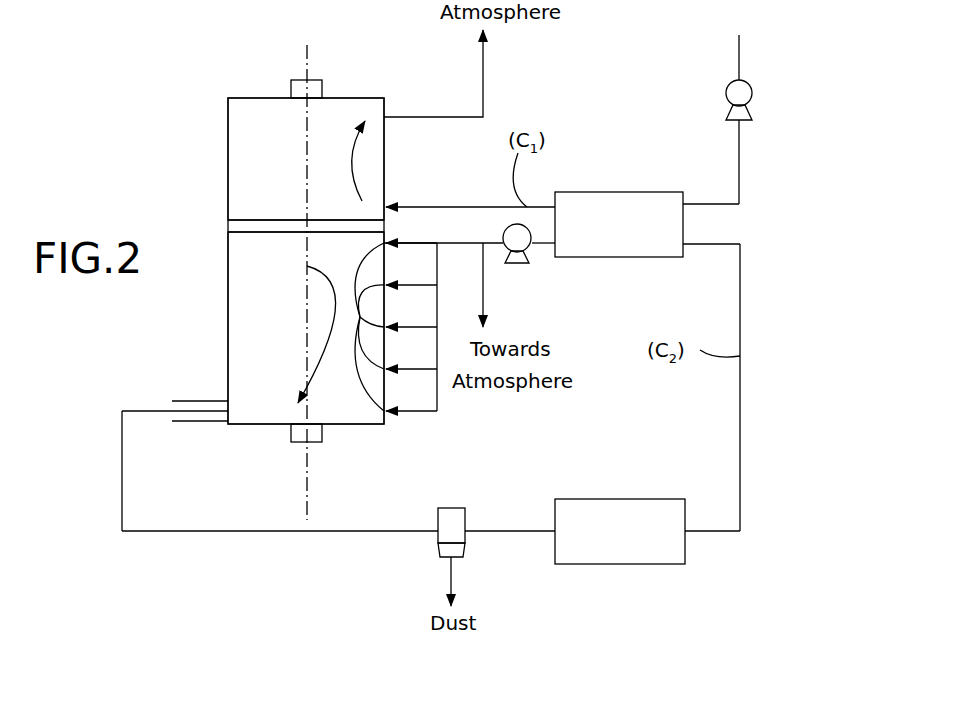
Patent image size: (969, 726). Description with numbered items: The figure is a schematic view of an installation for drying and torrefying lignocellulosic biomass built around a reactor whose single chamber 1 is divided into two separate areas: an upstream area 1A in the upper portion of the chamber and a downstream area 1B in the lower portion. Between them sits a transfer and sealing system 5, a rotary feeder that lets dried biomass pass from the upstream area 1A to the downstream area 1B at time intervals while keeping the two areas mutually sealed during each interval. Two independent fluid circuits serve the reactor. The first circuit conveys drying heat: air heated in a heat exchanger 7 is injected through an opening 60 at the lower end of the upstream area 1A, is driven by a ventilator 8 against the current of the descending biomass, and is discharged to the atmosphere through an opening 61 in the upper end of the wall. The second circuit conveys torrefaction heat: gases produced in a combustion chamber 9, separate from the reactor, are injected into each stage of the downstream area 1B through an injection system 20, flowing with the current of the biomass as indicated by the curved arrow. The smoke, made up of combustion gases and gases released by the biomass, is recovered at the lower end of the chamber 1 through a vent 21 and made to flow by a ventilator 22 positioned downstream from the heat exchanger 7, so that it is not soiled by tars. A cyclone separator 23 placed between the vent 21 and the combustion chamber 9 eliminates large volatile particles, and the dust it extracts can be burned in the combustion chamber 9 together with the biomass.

The chamber 1 is at (205, 137).
The upstream area 1A is at (306, 159).
The downstream area 1B is at (306, 328).
The transfer and sealing system 5 is at (289, 219).
The heat exchanger 7 is at (640, 200).
The ventilator 8 is at (742, 94).
The combustion chamber 9 is at (650, 512).
The injection system 20 is at (367, 327).
The vent 21 is at (227, 400).
The ventilator 22 is at (521, 262).
The cyclone separator 23 is at (460, 546).
The opening 60 is at (387, 205).
The opening 61 is at (388, 117).